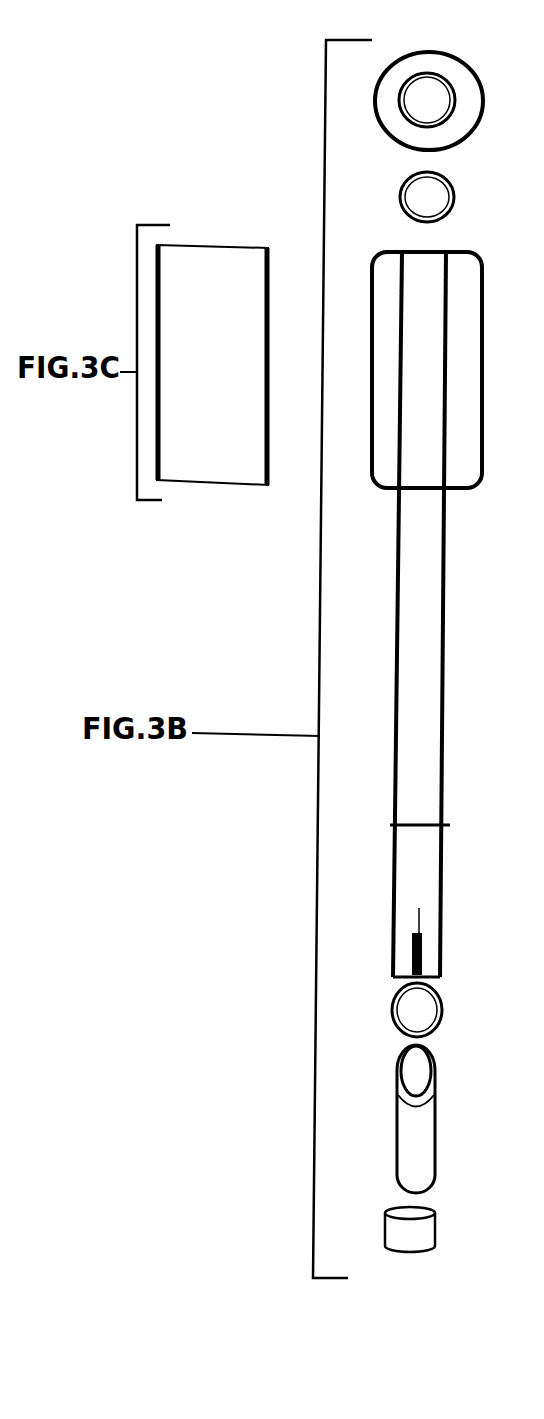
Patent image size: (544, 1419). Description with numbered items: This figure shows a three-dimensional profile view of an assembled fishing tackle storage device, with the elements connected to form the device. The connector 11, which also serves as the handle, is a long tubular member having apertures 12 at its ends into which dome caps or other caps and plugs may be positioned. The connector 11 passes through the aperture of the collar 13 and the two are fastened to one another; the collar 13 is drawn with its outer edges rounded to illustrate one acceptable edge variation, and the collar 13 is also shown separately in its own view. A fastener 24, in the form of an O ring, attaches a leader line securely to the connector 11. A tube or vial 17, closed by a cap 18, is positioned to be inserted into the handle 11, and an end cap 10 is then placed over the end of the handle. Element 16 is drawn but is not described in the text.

In FIG. 3B, the end cap 10 is at (415, 1237).
In FIG. 3B, the connector 11 is at (405, 78).
In FIG. 3B, the apertures 12 is at (425, 102).
In FIG. 3B, the collar 13 is at (415, 135).
In FIG. 3C, the collar 13 is at (223, 372).
In FIG. 3B, the wire 16 is at (382, 941).
In FIG. 3B, the tube and/or vial 17 is at (415, 1157).
In FIG. 3B, the cap 18 is at (418, 1067).
In FIG. 3B, the fastener 24 is at (395, 825).